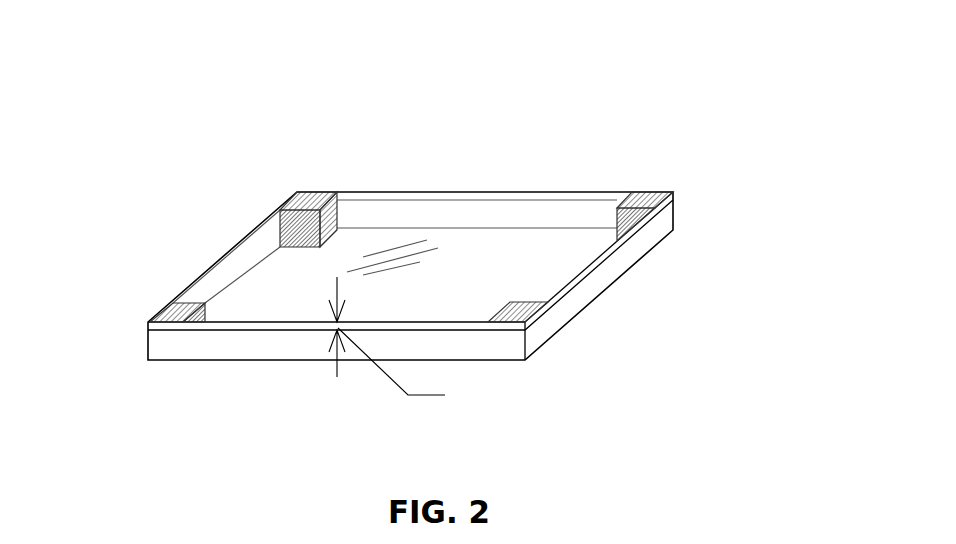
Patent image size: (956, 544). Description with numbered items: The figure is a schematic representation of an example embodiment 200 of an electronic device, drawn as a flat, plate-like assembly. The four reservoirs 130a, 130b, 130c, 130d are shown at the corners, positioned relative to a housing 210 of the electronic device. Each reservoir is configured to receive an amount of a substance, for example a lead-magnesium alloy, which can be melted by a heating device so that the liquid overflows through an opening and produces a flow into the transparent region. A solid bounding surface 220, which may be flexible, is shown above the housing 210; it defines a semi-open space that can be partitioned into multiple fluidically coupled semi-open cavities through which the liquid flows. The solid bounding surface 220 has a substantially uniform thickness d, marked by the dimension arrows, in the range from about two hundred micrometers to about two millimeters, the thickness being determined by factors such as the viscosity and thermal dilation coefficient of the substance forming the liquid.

The example embodiment 200 is at (712, 80).
The housing 210 is at (146, 340).
The solid bounding surface 220 is at (448, 190).
The reservoir 130a is at (308, 190).
The reservoir 130b is at (650, 190).
The reservoir 130c is at (176, 300).
The reservoir 130d is at (510, 300).